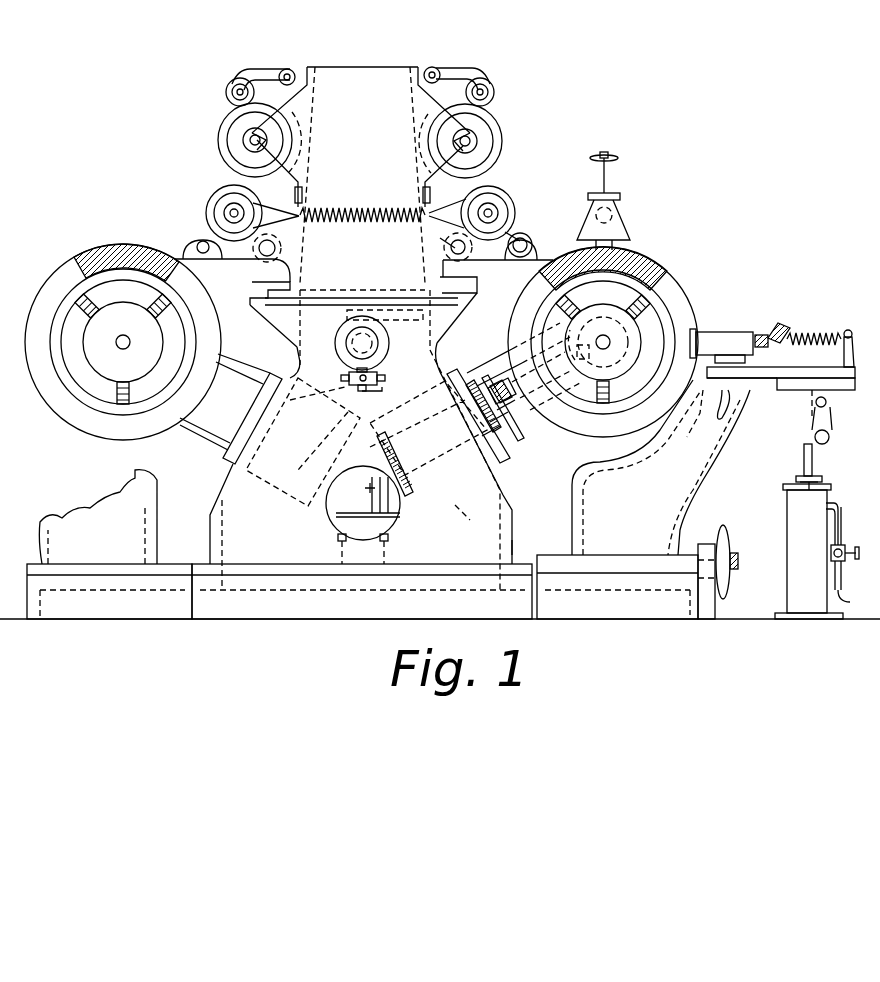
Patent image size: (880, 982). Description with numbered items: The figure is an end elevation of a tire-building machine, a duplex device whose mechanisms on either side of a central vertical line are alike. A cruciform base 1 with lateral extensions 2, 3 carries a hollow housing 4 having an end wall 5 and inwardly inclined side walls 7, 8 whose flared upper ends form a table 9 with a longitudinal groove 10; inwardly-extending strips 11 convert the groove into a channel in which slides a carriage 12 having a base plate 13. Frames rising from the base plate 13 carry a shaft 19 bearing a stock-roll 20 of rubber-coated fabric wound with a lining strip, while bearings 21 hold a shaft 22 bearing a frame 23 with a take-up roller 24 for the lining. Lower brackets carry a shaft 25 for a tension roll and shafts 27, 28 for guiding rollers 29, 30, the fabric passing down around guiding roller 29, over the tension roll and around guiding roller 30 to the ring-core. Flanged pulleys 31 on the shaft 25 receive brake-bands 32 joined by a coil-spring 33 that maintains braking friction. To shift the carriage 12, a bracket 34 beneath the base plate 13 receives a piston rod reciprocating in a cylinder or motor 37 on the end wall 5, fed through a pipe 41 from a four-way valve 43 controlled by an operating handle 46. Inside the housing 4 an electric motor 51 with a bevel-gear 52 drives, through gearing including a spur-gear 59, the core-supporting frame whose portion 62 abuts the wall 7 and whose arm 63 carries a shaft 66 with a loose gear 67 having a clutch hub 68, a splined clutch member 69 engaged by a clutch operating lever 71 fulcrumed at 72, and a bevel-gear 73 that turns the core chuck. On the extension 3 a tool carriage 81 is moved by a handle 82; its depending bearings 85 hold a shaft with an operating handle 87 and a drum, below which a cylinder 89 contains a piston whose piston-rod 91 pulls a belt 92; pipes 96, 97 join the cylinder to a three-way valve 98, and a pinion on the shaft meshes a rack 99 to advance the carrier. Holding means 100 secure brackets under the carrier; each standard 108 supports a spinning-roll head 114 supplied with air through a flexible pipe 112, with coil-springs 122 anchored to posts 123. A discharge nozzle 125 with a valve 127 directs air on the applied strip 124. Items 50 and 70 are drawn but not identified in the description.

The base 1 is at (362, 591).
The lateral extension 2 is at (109, 544).
The lateral extension 3 is at (617, 587).
The hollow housing 4 is at (512, 540).
The end wall 5 is at (361, 440).
The side wall 7 is at (465, 504).
The side wall 8 is at (232, 467).
The table 9 is at (478, 296).
The groove 10 is at (252, 306).
The strips 11 is at (472, 279).
The carriage 12 is at (378, 60).
The base plate 13 is at (372, 296).
The shaft 19 is at (472, 141).
The stock-roll 20 is at (490, 120).
The bearings 21 is at (440, 70).
The shaft 22 is at (470, 75).
The frame 23 is at (495, 88).
The take-up roller 24 is at (500, 95).
The shaft 25 is at (498, 208).
The shaft 27 is at (450, 252).
The shaft 28 is at (532, 246).
The guiding roller 29 is at (435, 241).
The guiding roller 30 is at (524, 238).
The flanged pulleys 31 is at (497, 190).
The brake-bands 32 is at (268, 192).
The coil-spring 33 is at (362, 198).
The bracket 34 is at (392, 317).
The cylinder or motor 37 is at (343, 338).
The pipe 41 is at (349, 378).
The four-way valve 43 is at (358, 390).
The operating handle 46 is at (365, 392).
The ball 50 is at (363, 515).
The electric motor 51 is at (363, 495).
The bevel-gear 52 is at (411, 496).
The spur-gear 59 is at (428, 428).
The portion 62 is at (446, 379).
The arm 63 is at (483, 376).
The rotatable shaft 66 is at (500, 412).
The gear 67 is at (482, 448).
The hub 68 is at (468, 385).
The clutch 69 is at (490, 435).
The wheel housing 70 is at (676, 272).
The clutch operating lever 71 is at (496, 422).
The fulcrum 72 is at (640, 345).
The bevel-gear 73 is at (606, 323).
The tool carriage 81 is at (661, 467).
The handle 82 is at (752, 530).
The depending bearings 85 is at (830, 424).
The operating handle 87 is at (813, 460).
The cylinder 89 is at (787, 512).
The piston-rod 91 is at (798, 483).
The belt 92 is at (805, 452).
The pipe 96 is at (834, 520).
The pipe 97 is at (835, 575).
The three-way valve 98 is at (831, 553).
The rack 99 is at (745, 404).
The holding means 100 is at (812, 414).
The standard 108 is at (777, 324).
The flexible pipe 112 is at (800, 334).
The head 114 is at (700, 330).
The coil-springs 122 is at (862, 338).
The posts 123 is at (781, 366).
The strip or layer 124 is at (632, 252).
The discharge nozzle 125 is at (630, 218).
The valve 127 is at (612, 160).